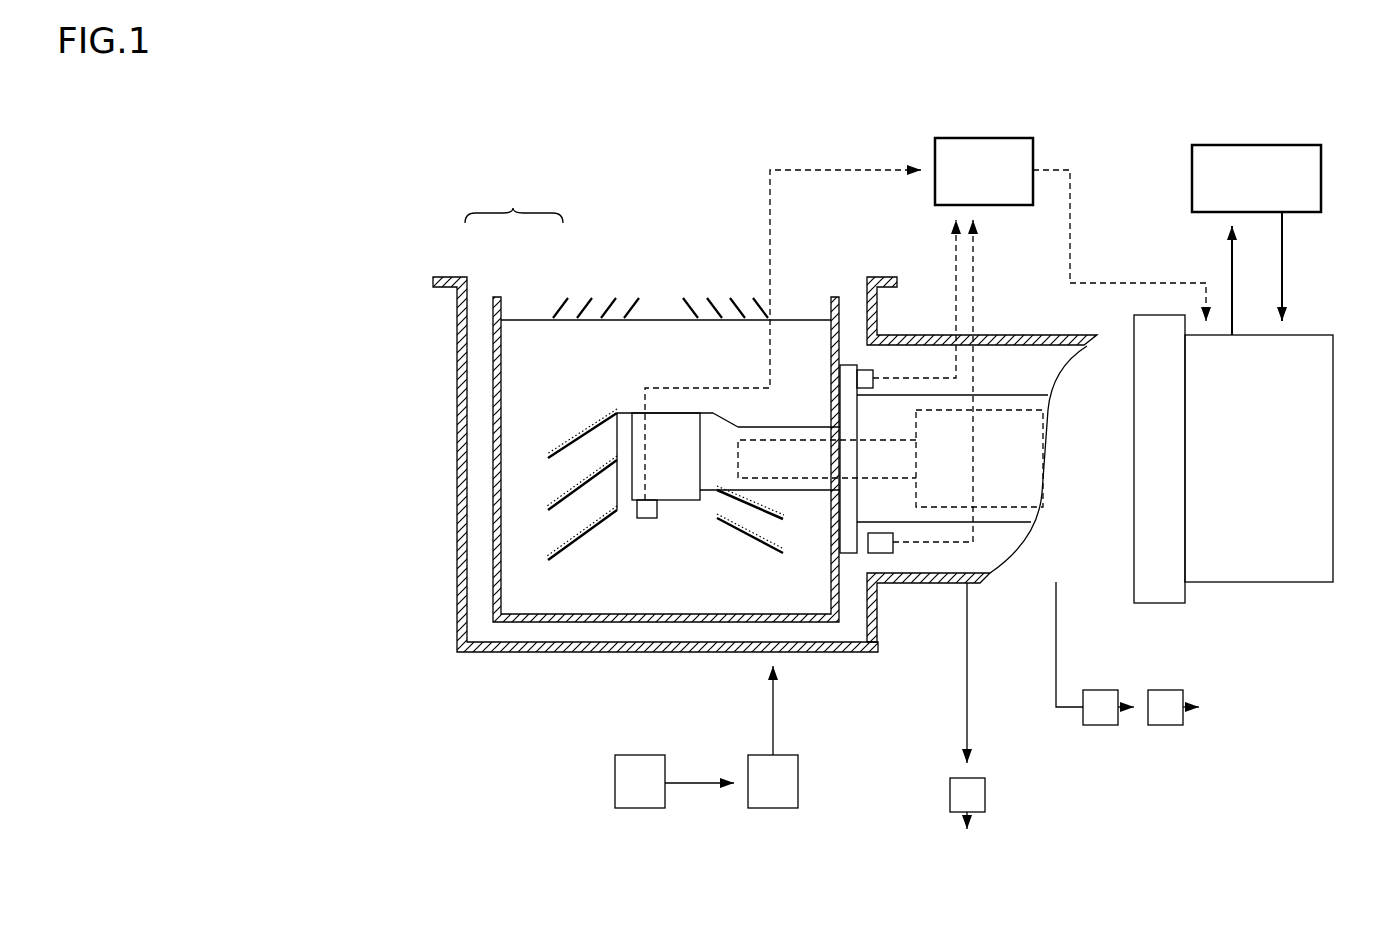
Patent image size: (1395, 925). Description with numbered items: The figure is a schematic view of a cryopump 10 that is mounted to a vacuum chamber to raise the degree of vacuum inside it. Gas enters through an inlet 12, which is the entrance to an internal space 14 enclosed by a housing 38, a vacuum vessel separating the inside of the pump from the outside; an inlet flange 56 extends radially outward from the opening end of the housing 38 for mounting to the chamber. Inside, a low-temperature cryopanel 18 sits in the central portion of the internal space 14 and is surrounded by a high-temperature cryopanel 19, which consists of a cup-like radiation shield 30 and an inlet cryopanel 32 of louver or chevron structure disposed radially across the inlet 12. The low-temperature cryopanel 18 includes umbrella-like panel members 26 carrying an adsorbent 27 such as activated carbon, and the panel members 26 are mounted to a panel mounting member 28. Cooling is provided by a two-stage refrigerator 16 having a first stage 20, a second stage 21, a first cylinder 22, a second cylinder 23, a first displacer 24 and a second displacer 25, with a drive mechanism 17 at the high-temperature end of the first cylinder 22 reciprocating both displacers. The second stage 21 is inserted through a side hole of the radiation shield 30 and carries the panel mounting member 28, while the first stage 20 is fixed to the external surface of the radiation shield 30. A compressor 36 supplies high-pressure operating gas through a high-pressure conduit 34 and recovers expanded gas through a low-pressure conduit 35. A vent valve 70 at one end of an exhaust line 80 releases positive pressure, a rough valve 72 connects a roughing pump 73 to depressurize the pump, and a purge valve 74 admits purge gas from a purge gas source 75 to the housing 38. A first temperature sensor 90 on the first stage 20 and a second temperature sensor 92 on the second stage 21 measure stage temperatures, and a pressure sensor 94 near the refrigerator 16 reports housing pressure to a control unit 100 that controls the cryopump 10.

The cryopump 10 is at (438, 733).
The inlet 12 is at (693, 288).
The internal space 14 is at (523, 590).
The refrigerator 16 is at (988, 392).
The drive mechanism 17 is at (1333, 358).
The low-temperature cryopanel 18 is at (579, 422).
The high-temperature cryopanel 19 is at (514, 203).
The first stage 20 is at (850, 364).
The second stage 21 is at (668, 501).
The first cylinder 22 is at (945, 523).
The second cylinder 23 is at (800, 497).
The first displacer 24 is at (1017, 410).
The second displacer 25 is at (795, 438).
The panel members 26 is at (587, 531).
The adsorbent 27 is at (558, 456).
The panel mounting member 28 is at (623, 412).
The radiation shield 30 is at (482, 302).
The inlet cryopanel 32 is at (557, 302).
The high-pressure conduit 34 is at (1282, 252).
The low-pressure conduit 35 is at (1232, 273).
The compressor 36 is at (1286, 145).
The housing 38 is at (458, 439).
The inlet flange 56 is at (880, 277).
The vent valve 70 is at (985, 786).
The rough valve 72 is at (1104, 690).
The roughing pump 73 is at (1166, 690).
The purge valve 74 is at (780, 808).
The purge gas source 75 is at (645, 808).
The exhaust line 80 is at (968, 650).
The first temperature sensor 90 is at (873, 370).
The second temperature sensor 92 is at (648, 519).
The pressure sensor 94 is at (890, 554).
The control unit 100 is at (996, 138).